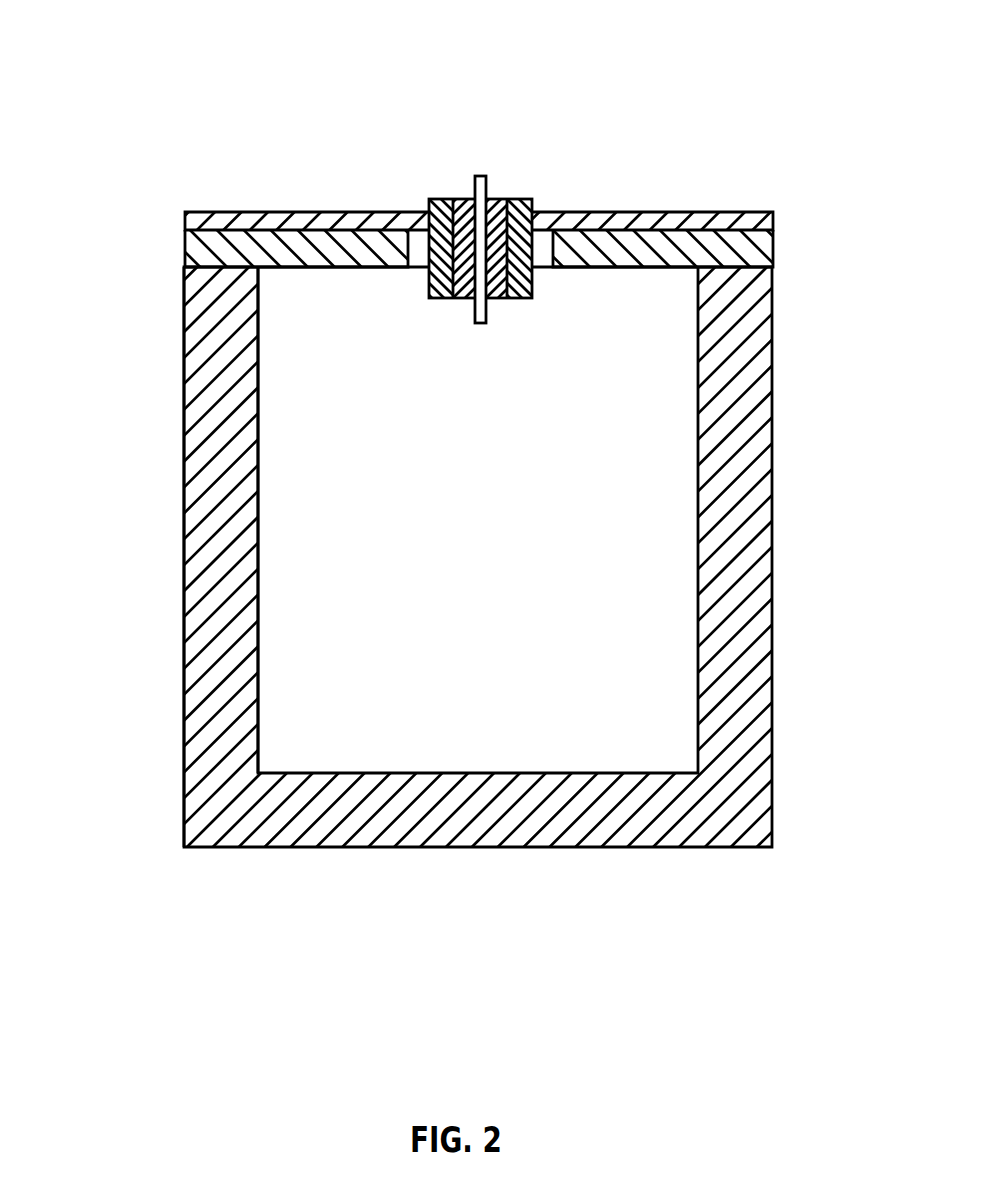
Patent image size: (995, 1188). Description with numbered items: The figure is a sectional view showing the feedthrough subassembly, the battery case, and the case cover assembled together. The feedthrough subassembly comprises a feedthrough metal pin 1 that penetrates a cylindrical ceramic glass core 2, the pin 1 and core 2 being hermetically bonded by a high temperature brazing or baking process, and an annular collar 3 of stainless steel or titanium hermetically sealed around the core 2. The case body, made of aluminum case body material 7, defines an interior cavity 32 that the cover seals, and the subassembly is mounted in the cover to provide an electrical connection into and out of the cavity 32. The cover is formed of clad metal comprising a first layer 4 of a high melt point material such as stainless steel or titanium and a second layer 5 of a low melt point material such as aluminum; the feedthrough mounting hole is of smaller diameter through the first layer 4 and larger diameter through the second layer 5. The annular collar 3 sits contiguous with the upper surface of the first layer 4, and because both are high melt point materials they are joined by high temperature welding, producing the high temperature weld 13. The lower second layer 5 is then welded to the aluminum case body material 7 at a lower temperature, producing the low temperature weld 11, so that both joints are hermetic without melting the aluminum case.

The feedthrough metal pin 1 is at (477, 176).
The ceramic glass core 2 is at (495, 199).
The annular collar 3 is at (517, 199).
The first layer 4 is at (185, 212).
The second layer 5 is at (773, 250).
The aluminum case body material 7 is at (318, 847).
The low temperature weld 11 is at (185, 267).
The high temperature weld 13 is at (428, 212).
The interior cavity 32 is at (465, 718).